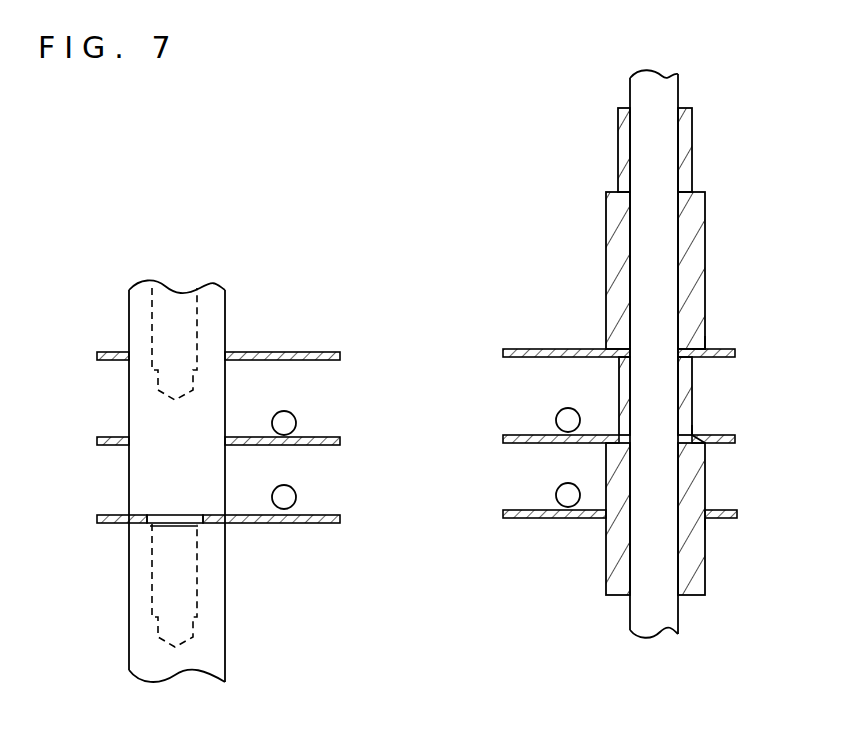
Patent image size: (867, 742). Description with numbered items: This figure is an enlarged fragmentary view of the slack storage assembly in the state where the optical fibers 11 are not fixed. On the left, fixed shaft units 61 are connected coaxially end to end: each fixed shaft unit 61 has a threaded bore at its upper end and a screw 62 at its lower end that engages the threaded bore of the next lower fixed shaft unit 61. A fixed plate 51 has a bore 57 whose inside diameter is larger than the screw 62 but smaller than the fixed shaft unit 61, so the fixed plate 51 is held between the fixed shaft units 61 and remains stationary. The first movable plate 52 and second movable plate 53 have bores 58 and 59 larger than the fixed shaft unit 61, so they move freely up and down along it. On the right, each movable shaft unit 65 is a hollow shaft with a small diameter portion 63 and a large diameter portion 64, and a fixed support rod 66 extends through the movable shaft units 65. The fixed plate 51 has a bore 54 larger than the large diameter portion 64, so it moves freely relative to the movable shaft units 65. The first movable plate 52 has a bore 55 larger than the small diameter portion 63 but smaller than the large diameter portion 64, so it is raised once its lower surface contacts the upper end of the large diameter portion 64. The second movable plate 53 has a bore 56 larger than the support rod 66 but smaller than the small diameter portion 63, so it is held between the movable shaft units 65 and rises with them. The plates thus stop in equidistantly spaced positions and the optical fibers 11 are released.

The optical fiber 11 is at (288, 423).
The fixed plate 51 is at (738, 512).
The first movable plate 52 is at (737, 440).
The second movable plate 53 is at (737, 353).
The bore 54 is at (708, 520).
The bore 55 is at (695, 436).
The bore 56 is at (680, 340).
The bore 57 is at (178, 520).
The bore 58 is at (229, 437).
The bore 59 is at (229, 352).
The fixed shaft unit 61 is at (143, 478).
The screw 62 is at (180, 317).
The small diameter portion 63 is at (620, 158).
The large diameter portion 64 is at (613, 250).
The movable shaft unit 65 is at (561, 377).
The fixed support rod 66 is at (672, 617).